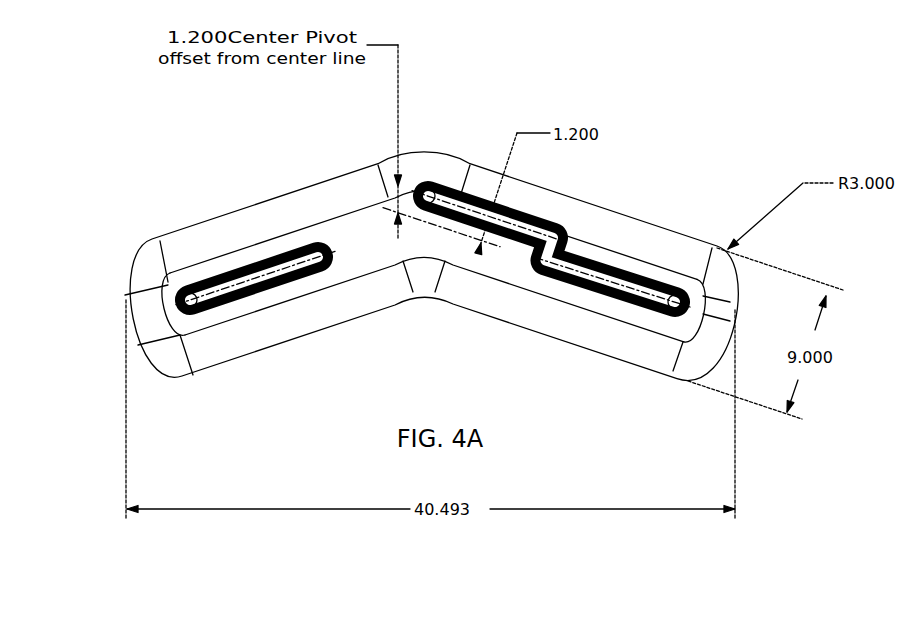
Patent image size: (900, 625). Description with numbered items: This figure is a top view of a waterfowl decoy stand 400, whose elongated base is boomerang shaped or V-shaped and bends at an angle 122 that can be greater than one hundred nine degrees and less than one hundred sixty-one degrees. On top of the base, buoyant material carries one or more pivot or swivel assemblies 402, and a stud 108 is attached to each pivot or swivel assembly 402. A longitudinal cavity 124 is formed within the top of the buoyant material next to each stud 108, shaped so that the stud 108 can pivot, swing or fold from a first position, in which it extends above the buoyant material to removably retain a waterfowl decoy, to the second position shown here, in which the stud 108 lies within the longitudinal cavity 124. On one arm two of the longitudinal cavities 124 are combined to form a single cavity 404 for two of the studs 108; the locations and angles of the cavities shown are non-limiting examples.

The waterfowl decoy stand 400 is at (656, 155).
The angle 122 is at (506, 320).
The longitudinal cavity 124 is at (283, 263).
The single cavity 404 is at (621, 195).
The stud 108 is at (237, 287).
The pivot or swivel assembly 402 is at (189, 293).